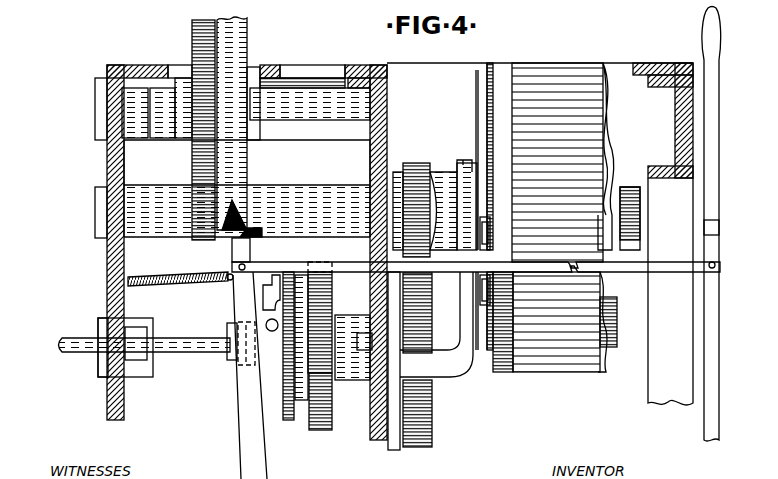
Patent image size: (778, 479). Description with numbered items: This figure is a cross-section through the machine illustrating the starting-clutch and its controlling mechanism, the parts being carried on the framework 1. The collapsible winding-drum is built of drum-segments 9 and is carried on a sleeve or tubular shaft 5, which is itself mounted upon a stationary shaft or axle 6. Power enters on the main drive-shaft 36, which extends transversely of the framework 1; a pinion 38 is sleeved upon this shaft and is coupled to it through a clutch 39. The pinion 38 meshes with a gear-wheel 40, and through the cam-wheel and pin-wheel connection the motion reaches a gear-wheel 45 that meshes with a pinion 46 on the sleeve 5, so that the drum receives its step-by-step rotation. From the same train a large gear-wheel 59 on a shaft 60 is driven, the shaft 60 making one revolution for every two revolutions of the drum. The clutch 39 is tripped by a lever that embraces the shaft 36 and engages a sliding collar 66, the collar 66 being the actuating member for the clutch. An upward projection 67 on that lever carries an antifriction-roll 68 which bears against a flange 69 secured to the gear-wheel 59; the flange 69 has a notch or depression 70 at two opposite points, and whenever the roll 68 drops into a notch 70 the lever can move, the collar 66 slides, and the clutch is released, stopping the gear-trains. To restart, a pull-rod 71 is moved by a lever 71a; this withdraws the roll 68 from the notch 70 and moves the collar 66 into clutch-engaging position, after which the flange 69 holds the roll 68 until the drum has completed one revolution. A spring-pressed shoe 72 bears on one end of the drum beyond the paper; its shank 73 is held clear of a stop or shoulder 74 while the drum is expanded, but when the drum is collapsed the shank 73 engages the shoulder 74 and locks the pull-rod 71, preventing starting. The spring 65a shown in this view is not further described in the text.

The framework 1 is at (385, 142).
The sleeve or tubular shaft 5 is at (470, 154).
The stationary shaft or axle 6 is at (634, 186).
The drum-segments 9 is at (610, 138).
The main drive-shaft 36 is at (70, 355).
The pinion 38 is at (318, 378).
The clutch 39 is at (287, 418).
The gear-wheel 40 is at (324, 301).
The gear-wheel 45 is at (430, 312).
The pinion 46 is at (418, 165).
The large gear-wheel 59 is at (198, 179).
The shaft 60 is at (199, 123).
The spring 65a is at (176, 268).
The sliding collar 66 is at (234, 366).
The upward projection 67 is at (247, 255).
The antifriction-roll 68 is at (259, 231).
The flange 69 is at (243, 173).
The notch or depression 70 is at (237, 210).
The pull-rod 71 is at (634, 278).
The lever 71a is at (716, 231).
The spring-pressed shoe 72 is at (498, 227).
The shank 73 is at (491, 280).
The stop or shoulder 74 is at (503, 266).